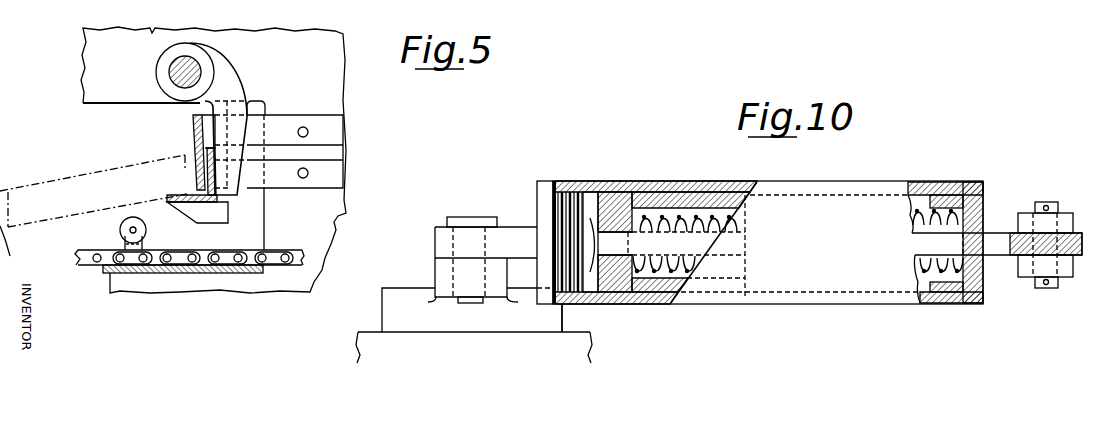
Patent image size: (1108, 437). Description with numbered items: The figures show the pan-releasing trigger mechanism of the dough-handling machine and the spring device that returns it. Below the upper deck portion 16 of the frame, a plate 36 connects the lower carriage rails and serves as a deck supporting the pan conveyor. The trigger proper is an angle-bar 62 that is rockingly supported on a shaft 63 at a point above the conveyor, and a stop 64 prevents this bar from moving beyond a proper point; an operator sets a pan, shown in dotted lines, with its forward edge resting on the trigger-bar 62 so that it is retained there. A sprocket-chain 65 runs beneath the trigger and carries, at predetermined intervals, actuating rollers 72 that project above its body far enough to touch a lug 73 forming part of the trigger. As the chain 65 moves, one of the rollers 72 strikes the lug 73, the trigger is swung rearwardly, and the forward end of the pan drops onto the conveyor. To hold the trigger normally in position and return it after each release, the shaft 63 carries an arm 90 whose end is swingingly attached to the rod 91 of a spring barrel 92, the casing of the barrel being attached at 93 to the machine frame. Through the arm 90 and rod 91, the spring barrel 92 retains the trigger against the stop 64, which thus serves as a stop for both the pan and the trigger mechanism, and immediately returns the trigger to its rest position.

In FIG. 5, the upper deck portion 16 is at (213, 160).
In FIG. 10, the upper deck portion 16 is at (474, 347).
In FIG. 5, the plate 36 is at (209, 273).
In FIG. 5, the angle-bar 62 is at (187, 185).
In FIG. 5, the shaft 63 is at (168, 74).
In FIG. 5, the stop 64 is at (194, 133).
In FIG. 5, the sprocket-chain 65 is at (79, 255).
In FIG. 5, the roller 72 is at (133, 217).
In FIG. 5, the lug 73 is at (219, 213).
In FIG. 10, the arm 90 is at (1025, 222).
In FIG. 10, the rod 91 is at (930, 242).
In FIG. 10, the spring barrel 92 is at (709, 193).
In FIG. 10, the casing attachment 93 is at (473, 230).